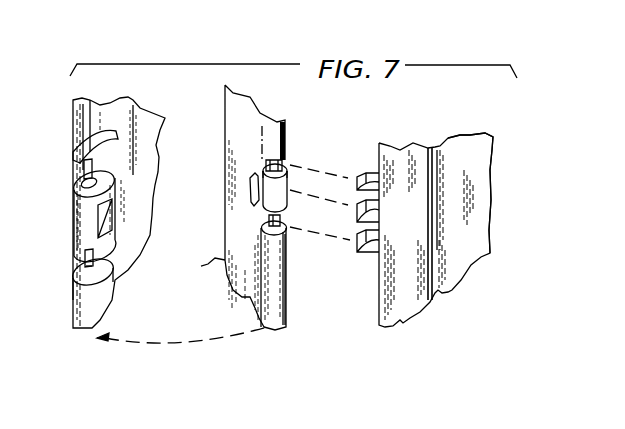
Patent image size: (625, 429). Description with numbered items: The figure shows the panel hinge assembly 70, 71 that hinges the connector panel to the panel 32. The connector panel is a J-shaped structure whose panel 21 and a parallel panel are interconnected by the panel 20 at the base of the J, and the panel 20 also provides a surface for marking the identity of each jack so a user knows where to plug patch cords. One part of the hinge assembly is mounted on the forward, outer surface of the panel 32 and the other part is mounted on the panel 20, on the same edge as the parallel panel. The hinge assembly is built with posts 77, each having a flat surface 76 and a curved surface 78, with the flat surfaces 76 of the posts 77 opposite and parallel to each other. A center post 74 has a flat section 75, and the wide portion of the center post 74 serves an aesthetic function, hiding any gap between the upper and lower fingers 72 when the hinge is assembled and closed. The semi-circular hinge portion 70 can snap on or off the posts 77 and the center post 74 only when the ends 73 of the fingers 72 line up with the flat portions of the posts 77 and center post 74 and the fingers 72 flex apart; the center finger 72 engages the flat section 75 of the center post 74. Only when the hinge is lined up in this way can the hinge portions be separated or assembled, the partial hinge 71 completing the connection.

The panel 20 is at (410, 318).
The panel 21 is at (490, 195).
The panel 32 is at (210, 272).
The hinge portion 70 is at (357, 218).
The partial hinge 71 is at (288, 187).
The fingers 72 is at (360, 173).
The ends of fingers 73 is at (357, 222).
The center post 74 is at (80, 225).
The flat section 75 is at (113, 238).
The flat surface 76 is at (98, 164).
The posts 77 is at (82, 176).
The curved surface 78 is at (78, 265).